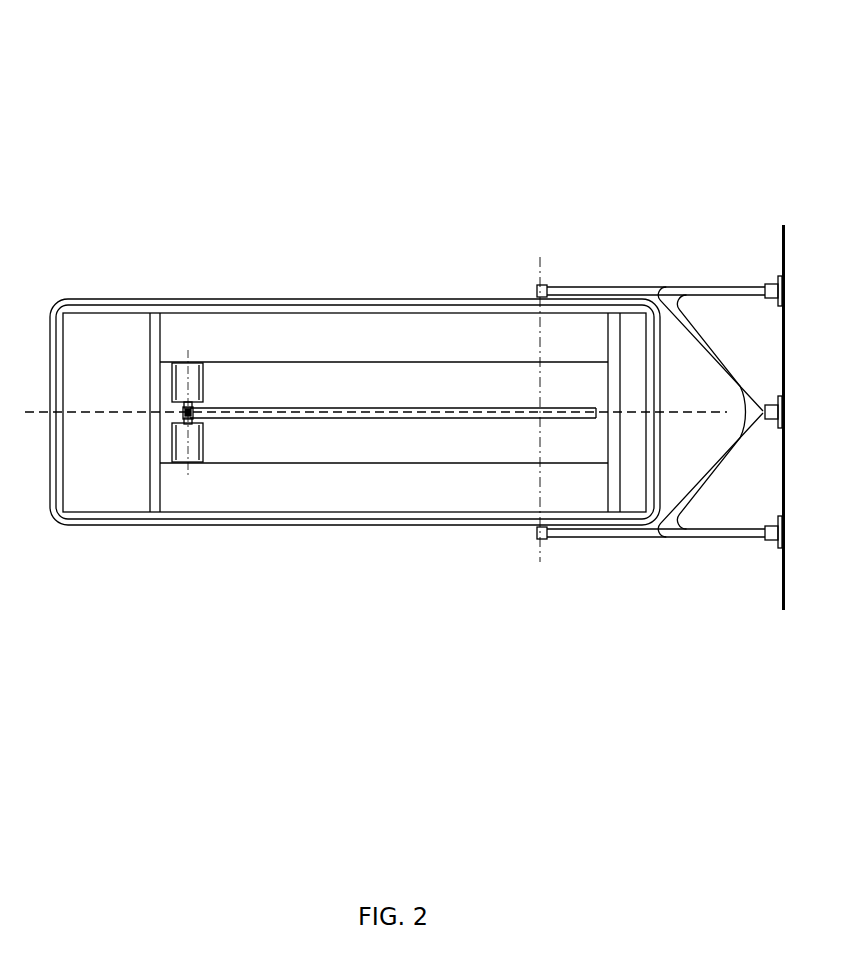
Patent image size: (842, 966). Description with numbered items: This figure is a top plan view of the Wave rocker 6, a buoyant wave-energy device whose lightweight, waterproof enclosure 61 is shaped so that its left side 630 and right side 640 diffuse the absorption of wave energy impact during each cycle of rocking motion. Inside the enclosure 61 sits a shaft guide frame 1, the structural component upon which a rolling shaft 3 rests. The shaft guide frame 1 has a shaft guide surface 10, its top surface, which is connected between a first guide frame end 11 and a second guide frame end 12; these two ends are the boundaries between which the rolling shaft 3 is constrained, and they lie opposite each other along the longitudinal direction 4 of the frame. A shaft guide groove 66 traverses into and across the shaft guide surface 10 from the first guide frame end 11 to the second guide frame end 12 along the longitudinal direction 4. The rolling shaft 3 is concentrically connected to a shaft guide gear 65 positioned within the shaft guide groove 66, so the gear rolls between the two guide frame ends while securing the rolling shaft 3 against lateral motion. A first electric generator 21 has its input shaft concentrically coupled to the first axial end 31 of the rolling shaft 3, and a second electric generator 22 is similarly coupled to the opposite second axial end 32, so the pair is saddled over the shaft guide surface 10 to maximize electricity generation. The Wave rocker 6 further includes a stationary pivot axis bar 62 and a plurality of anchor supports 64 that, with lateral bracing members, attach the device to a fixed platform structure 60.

The shaft guide frame 1 is at (352, 362).
The rolling shaft 3 is at (187, 418).
The longitudinal direction 4 is at (680, 410).
The Wave rocker 6 is at (470, 198).
The shaft guide surface 10 is at (430, 382).
The first guide frame end 11 is at (132, 358).
The second guide frame end 12 is at (637, 470).
The first electric generator 21 is at (192, 383).
The second electric generator 22 is at (193, 448).
The first axial end 31 is at (192, 403).
The second axial end 32 is at (192, 422).
The fixed platform structure 60 is at (782, 248).
The enclosure 61 is at (375, 515).
The stationary pivot axis bar 62 is at (537, 292).
The anchor supports 64 is at (665, 292).
The shaft guide gear 65 is at (187, 413).
The shaft guide groove 66 is at (312, 408).
The left side 630 is at (188, 280).
The right side 640 is at (163, 540).